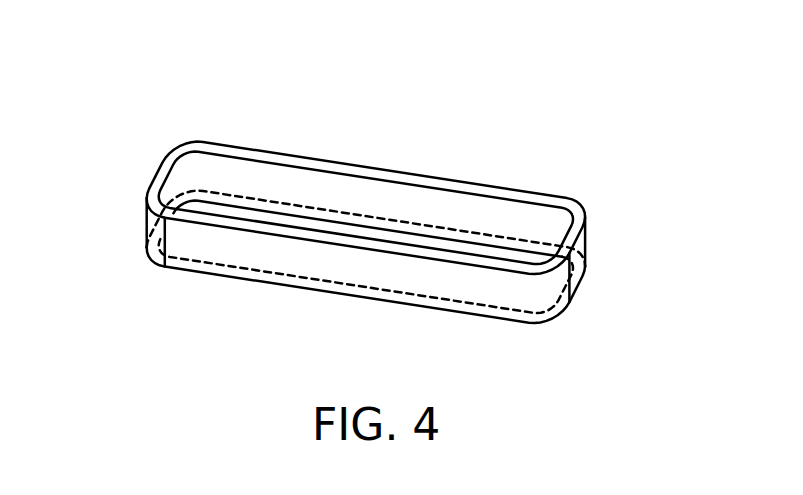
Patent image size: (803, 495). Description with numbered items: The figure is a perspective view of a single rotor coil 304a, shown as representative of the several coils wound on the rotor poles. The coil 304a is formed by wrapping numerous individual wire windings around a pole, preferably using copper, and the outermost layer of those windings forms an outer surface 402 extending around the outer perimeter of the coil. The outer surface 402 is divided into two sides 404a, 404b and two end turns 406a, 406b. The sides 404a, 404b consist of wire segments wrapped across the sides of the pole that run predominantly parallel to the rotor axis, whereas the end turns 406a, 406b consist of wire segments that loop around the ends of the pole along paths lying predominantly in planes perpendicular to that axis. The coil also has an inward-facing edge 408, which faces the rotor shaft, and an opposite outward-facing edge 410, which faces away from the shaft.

The coil 304a is at (430, 124).
The outer surface 402 is at (178, 248).
The side 404a is at (427, 284).
The side 404b is at (280, 142).
The end turn 406a is at (580, 280).
The end turn 406b is at (163, 178).
The inward-facing edge 408 is at (317, 293).
The outward-facing edge 410 is at (493, 190).